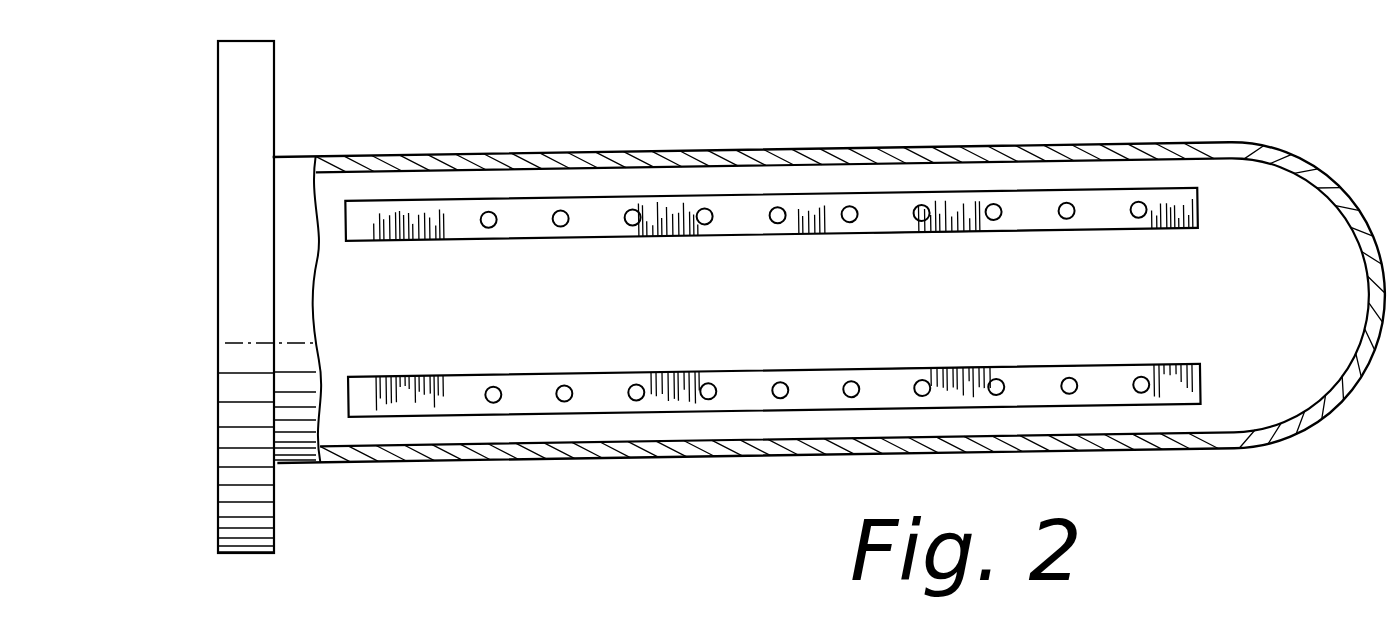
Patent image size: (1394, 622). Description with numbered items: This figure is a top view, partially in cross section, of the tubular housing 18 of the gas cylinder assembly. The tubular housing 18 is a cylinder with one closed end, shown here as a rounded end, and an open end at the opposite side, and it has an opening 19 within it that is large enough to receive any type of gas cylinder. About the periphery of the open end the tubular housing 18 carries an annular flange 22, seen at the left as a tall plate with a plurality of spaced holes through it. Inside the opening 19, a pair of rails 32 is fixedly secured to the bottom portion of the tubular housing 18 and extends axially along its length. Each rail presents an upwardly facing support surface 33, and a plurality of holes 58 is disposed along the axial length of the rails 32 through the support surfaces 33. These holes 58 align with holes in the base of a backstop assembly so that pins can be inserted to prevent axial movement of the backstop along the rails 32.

The tubular housing 18 is at (960, 153).
The opening 19 is at (851, 265).
The annular flange 22 is at (237, 300).
The rails 32 is at (975, 299).
The support surface 33 is at (772, 258).
The holes 58 is at (814, 246).